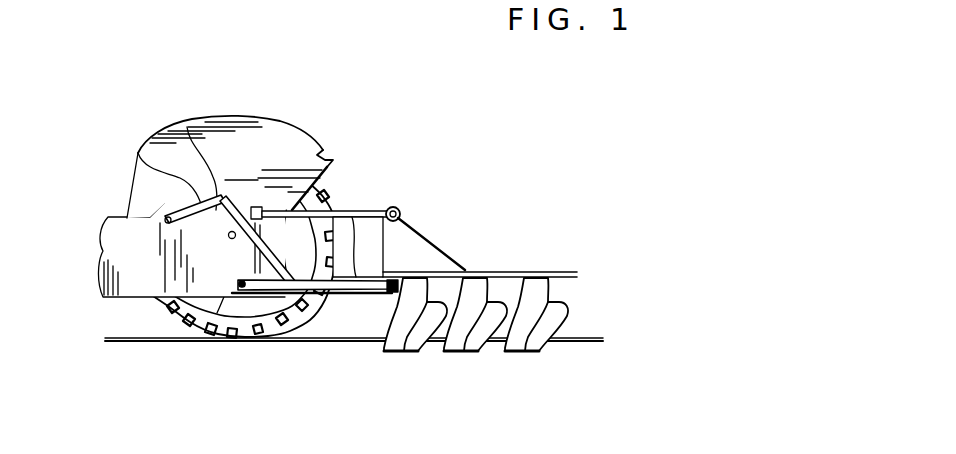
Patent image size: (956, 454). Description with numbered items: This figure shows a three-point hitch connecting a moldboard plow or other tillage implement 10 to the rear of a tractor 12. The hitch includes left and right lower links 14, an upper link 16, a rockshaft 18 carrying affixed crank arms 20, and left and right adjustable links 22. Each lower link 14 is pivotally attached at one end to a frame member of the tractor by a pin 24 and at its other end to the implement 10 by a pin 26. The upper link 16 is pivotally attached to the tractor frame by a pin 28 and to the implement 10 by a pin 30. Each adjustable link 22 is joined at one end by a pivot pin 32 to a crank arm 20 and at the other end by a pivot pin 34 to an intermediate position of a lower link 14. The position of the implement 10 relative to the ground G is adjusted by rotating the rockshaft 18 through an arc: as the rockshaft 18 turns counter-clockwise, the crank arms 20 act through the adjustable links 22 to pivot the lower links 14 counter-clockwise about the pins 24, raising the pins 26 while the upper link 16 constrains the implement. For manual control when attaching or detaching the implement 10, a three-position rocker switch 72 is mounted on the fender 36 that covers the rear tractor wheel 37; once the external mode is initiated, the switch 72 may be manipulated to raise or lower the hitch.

The tillage implement 10 is at (473, 226).
The tractor 12 is at (103, 260).
The lower links 14 is at (322, 295).
The upper link 16 is at (358, 247).
The rockshaft 18 is at (160, 224).
The crank arms 20 is at (138, 153).
The adjustable links 22 is at (250, 253).
The pins 24 is at (217, 296).
The pins 26 is at (397, 294).
The pin 28 is at (250, 208).
The pin 30 is at (400, 211).
The pivot pin 32 is at (187, 127).
The pivot pin 34 is at (256, 338).
The fenders 36 is at (258, 117).
The rear tractor wheels 37 is at (325, 292).
The rocker switch 72 is at (327, 153).
The ground G is at (120, 337).